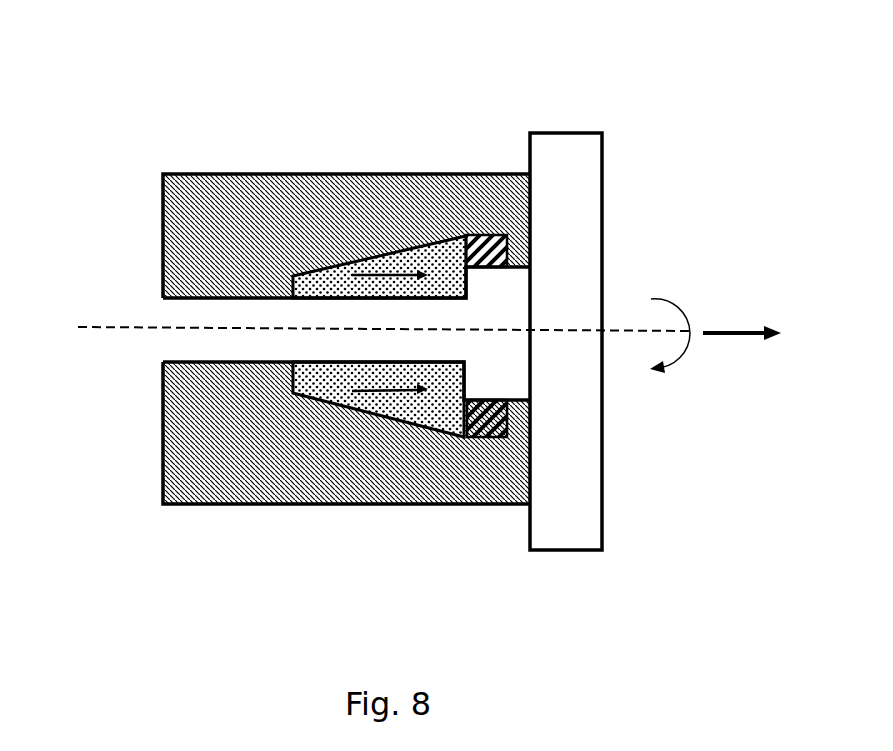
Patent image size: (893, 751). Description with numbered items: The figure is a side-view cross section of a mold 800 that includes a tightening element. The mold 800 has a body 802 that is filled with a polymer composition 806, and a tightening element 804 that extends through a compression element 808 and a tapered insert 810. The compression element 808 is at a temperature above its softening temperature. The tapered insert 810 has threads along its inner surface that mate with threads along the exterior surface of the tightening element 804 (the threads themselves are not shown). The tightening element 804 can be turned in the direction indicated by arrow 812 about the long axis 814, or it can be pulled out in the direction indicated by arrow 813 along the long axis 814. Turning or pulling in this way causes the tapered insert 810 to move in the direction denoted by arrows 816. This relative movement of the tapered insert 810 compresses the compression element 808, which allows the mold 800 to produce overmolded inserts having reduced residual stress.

The mold 800 is at (543, 97).
The body 802 is at (203, 173).
The tightening element 804 is at (573, 144).
The polymer composition 806 is at (185, 245).
The compression element 808 is at (488, 249).
The tapered insert 810 is at (437, 420).
The arrow 812 is at (677, 358).
The arrow 813 is at (727, 331).
The long axis 814 is at (135, 325).
The arrows 816 is at (393, 274).